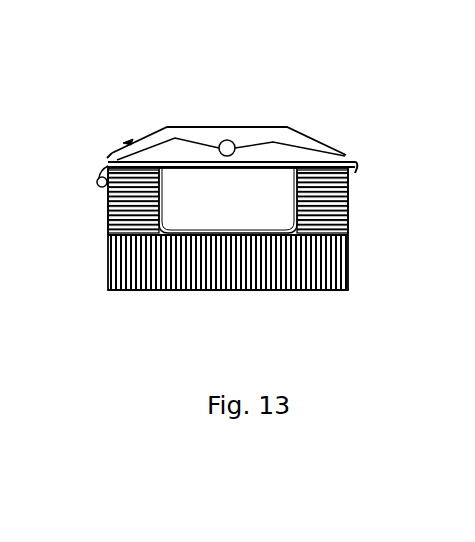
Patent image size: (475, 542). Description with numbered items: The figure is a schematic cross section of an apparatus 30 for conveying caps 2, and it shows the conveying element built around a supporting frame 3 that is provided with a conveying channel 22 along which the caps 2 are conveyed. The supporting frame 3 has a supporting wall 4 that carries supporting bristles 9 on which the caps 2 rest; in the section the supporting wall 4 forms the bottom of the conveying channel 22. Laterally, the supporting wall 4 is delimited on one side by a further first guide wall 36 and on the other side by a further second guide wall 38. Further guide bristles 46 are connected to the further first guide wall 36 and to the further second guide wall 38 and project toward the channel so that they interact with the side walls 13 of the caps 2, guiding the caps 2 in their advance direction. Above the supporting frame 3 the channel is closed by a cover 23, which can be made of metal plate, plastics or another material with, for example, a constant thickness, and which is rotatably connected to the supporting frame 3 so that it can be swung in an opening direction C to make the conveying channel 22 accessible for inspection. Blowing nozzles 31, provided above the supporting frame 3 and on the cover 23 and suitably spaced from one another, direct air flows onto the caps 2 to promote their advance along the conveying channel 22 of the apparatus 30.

The cap 2 is at (290, 237).
The supporting frame 3 is at (343, 101).
The supporting wall 4 is at (157, 292).
The supporting bristles 9 is at (127, 265).
The side walls 13 is at (165, 197).
The conveying channel 22 is at (363, 272).
The cover 23 is at (172, 162).
The apparatus 30 is at (199, 87).
The blowing nozzles 31 is at (237, 142).
The further first guide wall 36 is at (349, 222).
The further second guide wall 38 is at (110, 213).
The further guide bristles 46 is at (128, 222).
The opening direction C is at (145, 167).